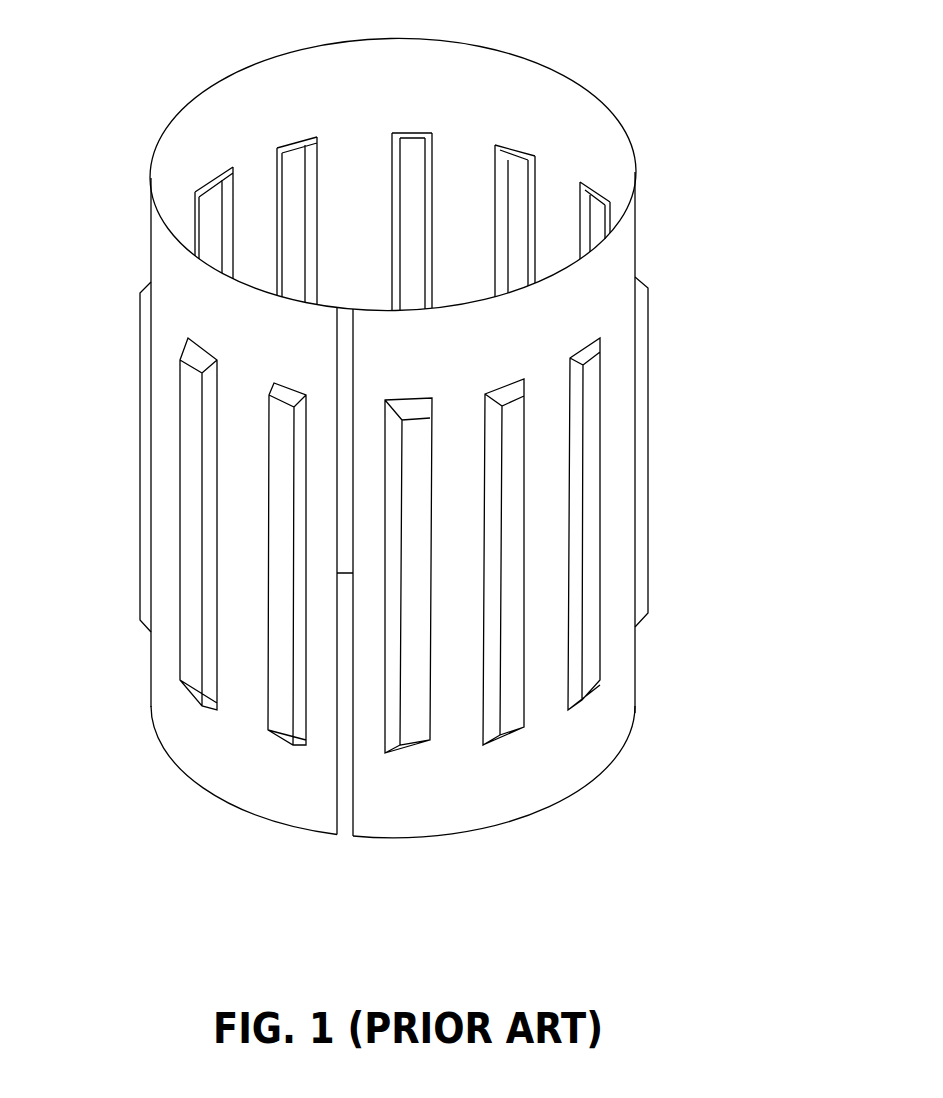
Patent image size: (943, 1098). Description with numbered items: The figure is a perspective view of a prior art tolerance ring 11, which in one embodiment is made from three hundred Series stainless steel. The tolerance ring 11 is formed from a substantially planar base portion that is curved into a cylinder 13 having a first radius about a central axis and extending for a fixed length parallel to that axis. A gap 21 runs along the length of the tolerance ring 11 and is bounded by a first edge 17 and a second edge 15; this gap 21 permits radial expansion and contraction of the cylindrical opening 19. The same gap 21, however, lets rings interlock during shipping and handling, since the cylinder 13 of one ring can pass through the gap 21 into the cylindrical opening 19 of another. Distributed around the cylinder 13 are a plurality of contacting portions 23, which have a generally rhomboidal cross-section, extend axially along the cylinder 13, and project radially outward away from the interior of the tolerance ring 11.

The tolerance ring 11 is at (666, 91).
The cylinder 13 is at (603, 288).
The second edge 15 is at (312, 807).
The first edge 17 is at (375, 805).
The cylindrical opening 19 is at (267, 112).
The gap 21 is at (347, 755).
The contacting portions 23 is at (189, 408).